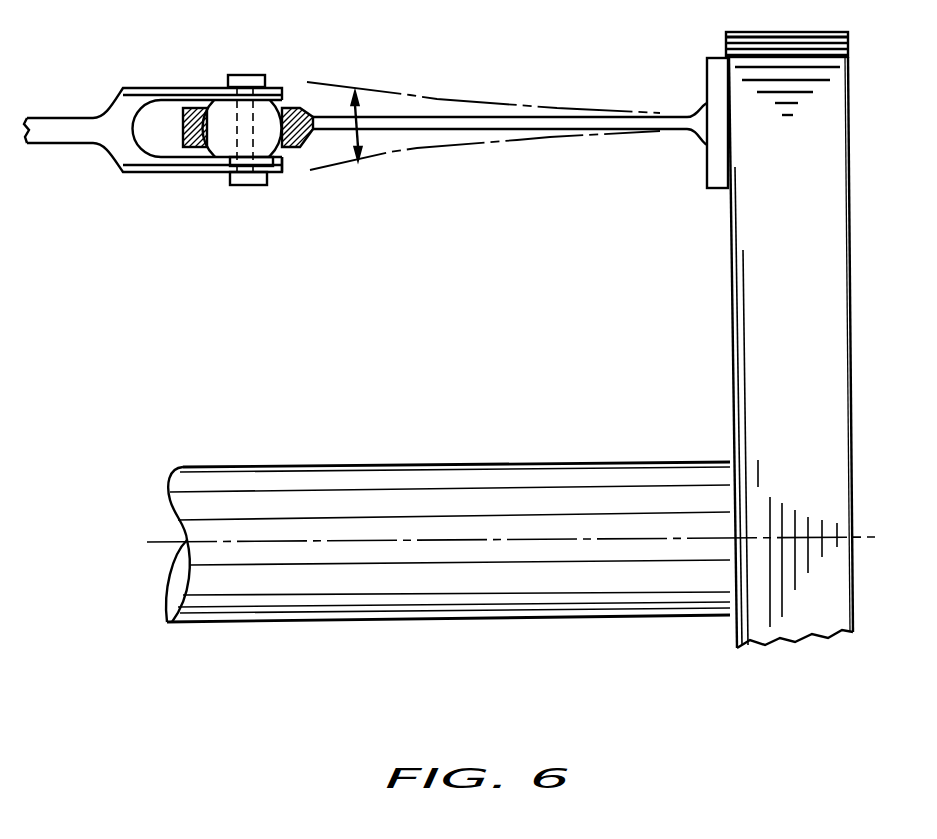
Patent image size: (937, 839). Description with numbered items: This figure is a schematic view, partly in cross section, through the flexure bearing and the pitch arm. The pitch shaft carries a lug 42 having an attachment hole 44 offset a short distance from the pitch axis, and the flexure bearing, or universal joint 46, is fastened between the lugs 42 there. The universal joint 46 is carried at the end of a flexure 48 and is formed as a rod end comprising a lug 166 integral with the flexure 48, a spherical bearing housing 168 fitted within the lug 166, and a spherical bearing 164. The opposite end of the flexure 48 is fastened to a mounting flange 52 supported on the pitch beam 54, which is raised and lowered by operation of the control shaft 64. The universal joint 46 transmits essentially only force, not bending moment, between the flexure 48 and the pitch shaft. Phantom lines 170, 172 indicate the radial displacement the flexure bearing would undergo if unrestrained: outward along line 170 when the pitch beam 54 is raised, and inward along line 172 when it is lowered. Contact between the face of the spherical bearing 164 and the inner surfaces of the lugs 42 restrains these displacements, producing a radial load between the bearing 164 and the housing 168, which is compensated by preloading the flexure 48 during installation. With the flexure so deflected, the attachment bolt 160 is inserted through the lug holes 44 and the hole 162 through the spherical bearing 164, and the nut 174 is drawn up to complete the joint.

The lug 42 is at (133, 152).
The attachment hole 44 is at (242, 160).
The universal joint 46 is at (310, 113).
The flexure 48 is at (600, 125).
The mounting flange 52 is at (730, 167).
The pitch beam 54 is at (757, 342).
The control shaft 64 is at (633, 580).
The attachment bolt 160 is at (230, 77).
The hole 162 is at (242, 138).
The spherical bearing 164 is at (282, 173).
The lug 166 is at (183, 128).
The spherical bearing housing 168 is at (303, 107).
The phantom line 170 is at (398, 92).
The phantom line 172 is at (427, 152).
The nut 174 is at (247, 185).